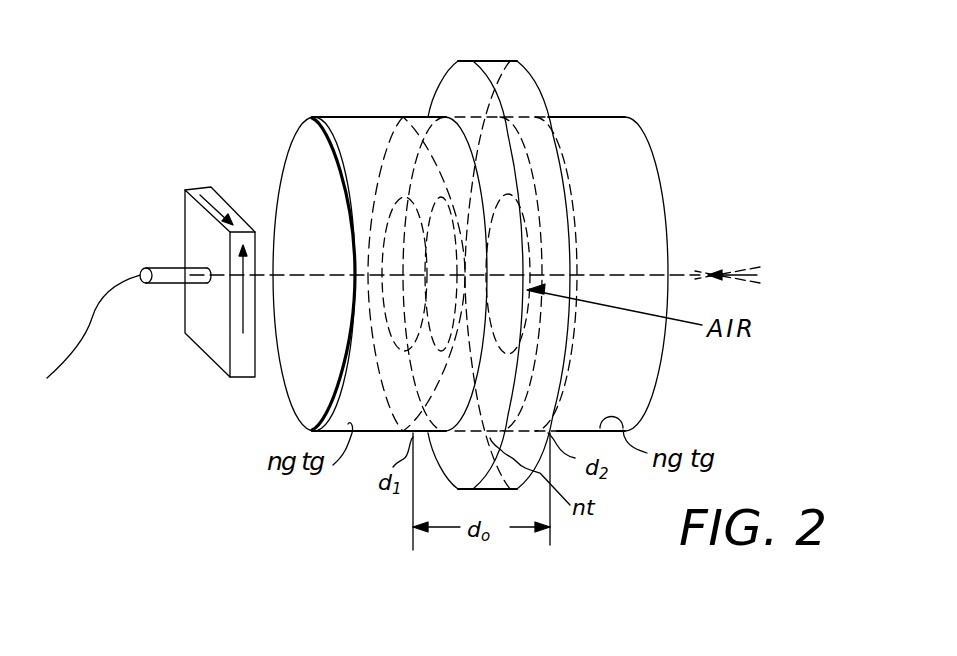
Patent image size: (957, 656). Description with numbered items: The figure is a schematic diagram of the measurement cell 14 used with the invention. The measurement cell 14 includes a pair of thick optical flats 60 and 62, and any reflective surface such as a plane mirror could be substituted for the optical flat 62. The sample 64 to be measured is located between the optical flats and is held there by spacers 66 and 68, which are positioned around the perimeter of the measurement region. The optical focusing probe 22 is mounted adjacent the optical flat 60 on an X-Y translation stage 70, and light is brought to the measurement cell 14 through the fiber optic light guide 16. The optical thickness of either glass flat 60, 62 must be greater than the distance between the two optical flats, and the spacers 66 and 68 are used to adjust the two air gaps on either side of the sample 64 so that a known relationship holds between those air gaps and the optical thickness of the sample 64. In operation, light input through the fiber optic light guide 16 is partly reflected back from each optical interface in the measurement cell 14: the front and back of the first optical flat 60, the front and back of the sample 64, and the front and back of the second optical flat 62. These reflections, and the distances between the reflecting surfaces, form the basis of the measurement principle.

The measurement cell 14 is at (643, 63).
The fiber optic light guide 16 is at (92, 322).
The optical focusing probe 22 is at (165, 272).
The optical flat 60 is at (342, 128).
The optical flat 62 is at (631, 140).
The sample 64 is at (504, 63).
The spacer 66 is at (427, 117).
The spacer 68 is at (528, 117).
The X-Y translation stage 70 is at (226, 197).